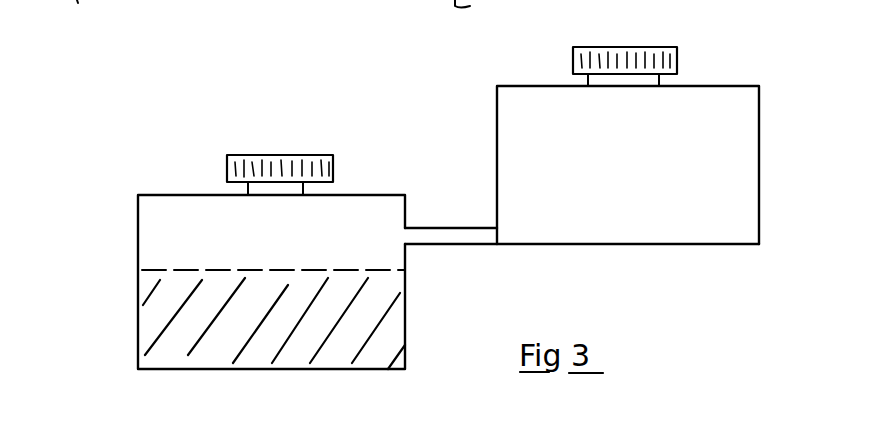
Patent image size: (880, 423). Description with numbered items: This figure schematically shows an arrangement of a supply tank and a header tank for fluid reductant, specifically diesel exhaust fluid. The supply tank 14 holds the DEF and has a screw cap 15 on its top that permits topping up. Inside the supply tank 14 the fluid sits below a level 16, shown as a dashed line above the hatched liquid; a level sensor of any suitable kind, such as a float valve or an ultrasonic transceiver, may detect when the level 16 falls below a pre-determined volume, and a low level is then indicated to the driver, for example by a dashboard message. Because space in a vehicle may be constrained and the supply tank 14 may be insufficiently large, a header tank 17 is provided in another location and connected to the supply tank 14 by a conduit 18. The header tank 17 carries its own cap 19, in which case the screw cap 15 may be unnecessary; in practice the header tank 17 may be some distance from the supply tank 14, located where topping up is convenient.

The supply tank 14 is at (122, 325).
The screw cap 15 is at (263, 151).
The level 16 is at (154, 265).
The header tank 17 is at (492, 137).
The conduit 18 is at (447, 235).
The cap 19 is at (662, 43).